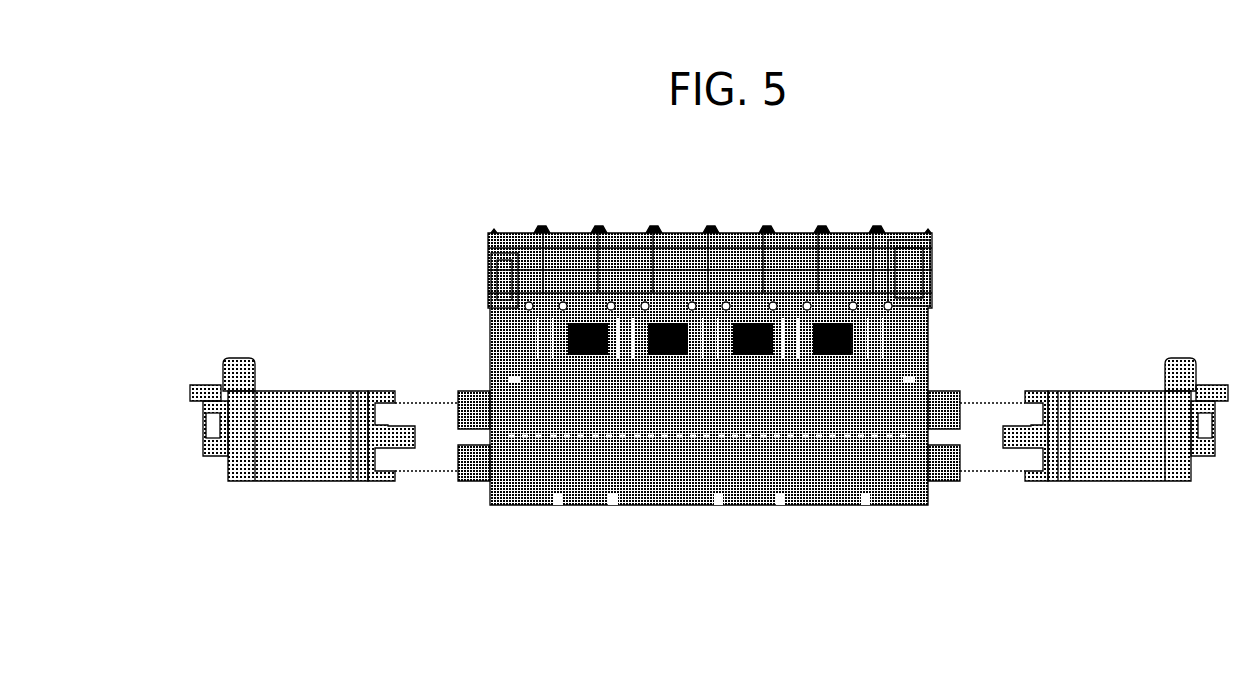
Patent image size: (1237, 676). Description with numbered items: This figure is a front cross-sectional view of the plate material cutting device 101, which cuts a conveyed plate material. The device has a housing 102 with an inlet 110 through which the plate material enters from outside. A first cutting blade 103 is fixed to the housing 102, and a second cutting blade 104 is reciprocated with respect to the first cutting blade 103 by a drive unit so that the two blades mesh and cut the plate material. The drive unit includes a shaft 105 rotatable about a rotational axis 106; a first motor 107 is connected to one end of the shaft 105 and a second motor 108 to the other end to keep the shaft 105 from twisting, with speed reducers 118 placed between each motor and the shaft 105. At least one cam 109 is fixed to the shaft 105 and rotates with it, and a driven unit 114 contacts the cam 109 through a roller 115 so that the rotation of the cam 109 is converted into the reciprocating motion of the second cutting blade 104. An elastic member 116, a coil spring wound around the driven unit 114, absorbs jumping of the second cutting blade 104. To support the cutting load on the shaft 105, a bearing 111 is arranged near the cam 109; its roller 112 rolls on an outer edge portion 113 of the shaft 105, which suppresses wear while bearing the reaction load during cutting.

The plate material cutting device 101 is at (462, 206).
The housing 102 is at (922, 232).
The first cutting blade 103 is at (733, 272).
The second cutting blade 104 is at (783, 289).
The shaft 105 is at (580, 455).
The rotational axis 106 is at (523, 432).
The first motor 107 is at (290, 460).
The second motor 108 is at (1110, 455).
The cam 109 is at (800, 473).
The inlet 110 is at (505, 262).
The bearing 111 is at (636, 482).
The roller 112 is at (668, 460).
The outer edge portion 113 is at (713, 455).
The driven unit 114 is at (790, 350).
The roller 115 is at (905, 388).
The elastic member 116 is at (810, 364).
The speed reducers 118 is at (415, 461).